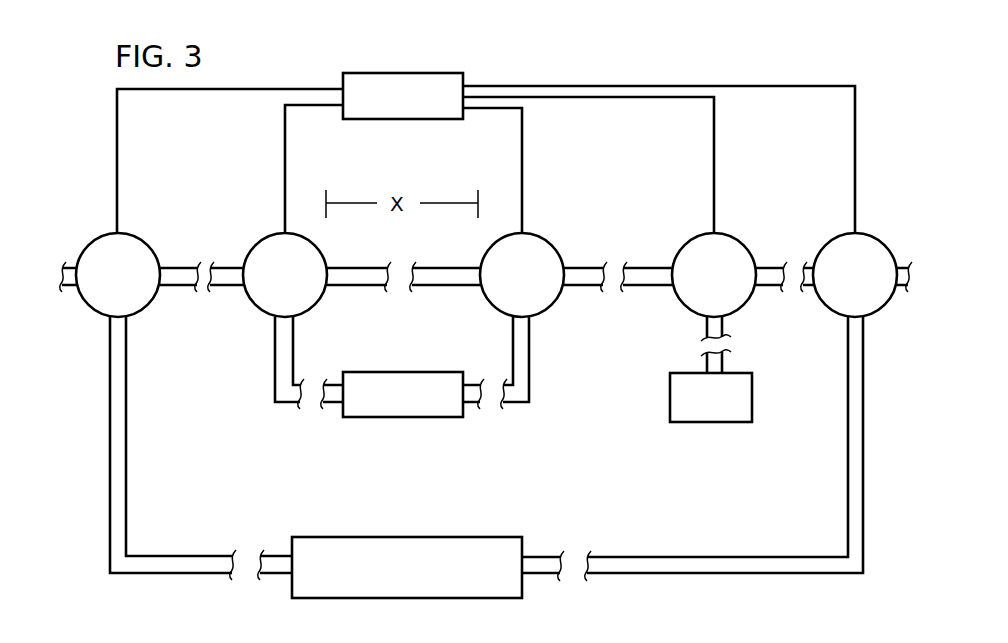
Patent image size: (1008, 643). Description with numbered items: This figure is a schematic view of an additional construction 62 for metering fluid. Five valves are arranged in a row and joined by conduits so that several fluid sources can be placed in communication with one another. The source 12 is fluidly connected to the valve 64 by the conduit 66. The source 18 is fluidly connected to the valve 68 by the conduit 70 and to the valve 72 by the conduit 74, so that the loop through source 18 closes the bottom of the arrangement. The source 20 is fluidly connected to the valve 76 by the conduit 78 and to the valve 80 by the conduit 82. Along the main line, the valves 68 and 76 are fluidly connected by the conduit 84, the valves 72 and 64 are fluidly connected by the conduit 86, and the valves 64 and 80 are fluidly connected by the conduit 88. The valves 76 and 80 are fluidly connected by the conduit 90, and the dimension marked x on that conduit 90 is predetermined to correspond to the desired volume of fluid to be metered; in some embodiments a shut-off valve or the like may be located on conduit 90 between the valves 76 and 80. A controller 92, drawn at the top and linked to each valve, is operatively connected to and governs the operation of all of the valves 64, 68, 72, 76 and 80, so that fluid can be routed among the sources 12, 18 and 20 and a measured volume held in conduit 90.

The construction for metering fluid 62 is at (220, 613).
The valve 68 is at (95, 247).
The valve 76 is at (316, 248).
The valve 80 is at (489, 247).
The valve 64 is at (681, 245).
The valve 72 is at (889, 243).
The conduit 84 is at (231, 262).
The conduit 90 is at (357, 288).
The conduit 88 is at (645, 262).
The conduit 86 is at (806, 263).
The controller 92 is at (396, 73).
The source 20 is at (405, 420).
The conduit 78 is at (337, 406).
The conduit 82 is at (513, 406).
The source 18 is at (410, 536).
The conduit 70 is at (278, 553).
The conduit 74 is at (612, 555).
The conduit 66 is at (703, 360).
The source 12 is at (712, 422).